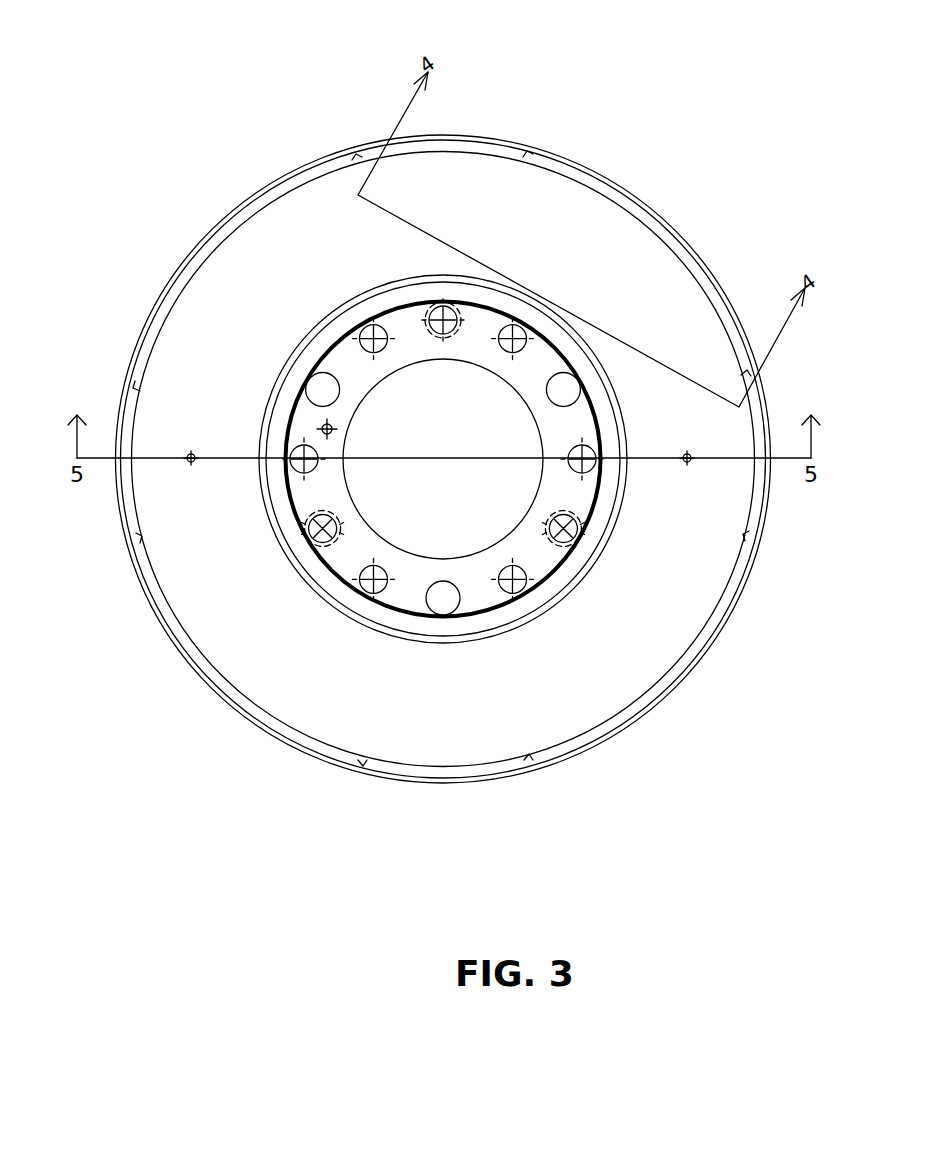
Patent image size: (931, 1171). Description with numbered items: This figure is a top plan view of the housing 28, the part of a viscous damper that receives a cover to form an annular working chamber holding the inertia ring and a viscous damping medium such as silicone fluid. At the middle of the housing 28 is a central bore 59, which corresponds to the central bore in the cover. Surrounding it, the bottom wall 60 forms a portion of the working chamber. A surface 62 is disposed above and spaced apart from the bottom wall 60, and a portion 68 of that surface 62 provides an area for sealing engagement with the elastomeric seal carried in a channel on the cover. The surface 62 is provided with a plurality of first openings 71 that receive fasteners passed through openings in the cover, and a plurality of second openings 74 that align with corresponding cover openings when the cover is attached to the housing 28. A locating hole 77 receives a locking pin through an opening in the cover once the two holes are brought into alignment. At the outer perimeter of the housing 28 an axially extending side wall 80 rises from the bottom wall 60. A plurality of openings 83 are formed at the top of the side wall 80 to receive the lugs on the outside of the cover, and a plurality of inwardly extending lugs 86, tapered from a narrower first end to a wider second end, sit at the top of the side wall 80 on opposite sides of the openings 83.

The housing 28 is at (200, 180).
The central bore 59 is at (483, 538).
The bottom wall 60 is at (443, 459).
The surface 62 is at (272, 508).
The portion of the surface 68 is at (360, 603).
The first openings 71 is at (436, 316).
The second openings 74 is at (283, 443).
The locating hole 77 is at (335, 427).
The side wall 80 is at (668, 712).
The openings 83 is at (428, 755).
The lugs 86 is at (578, 720).